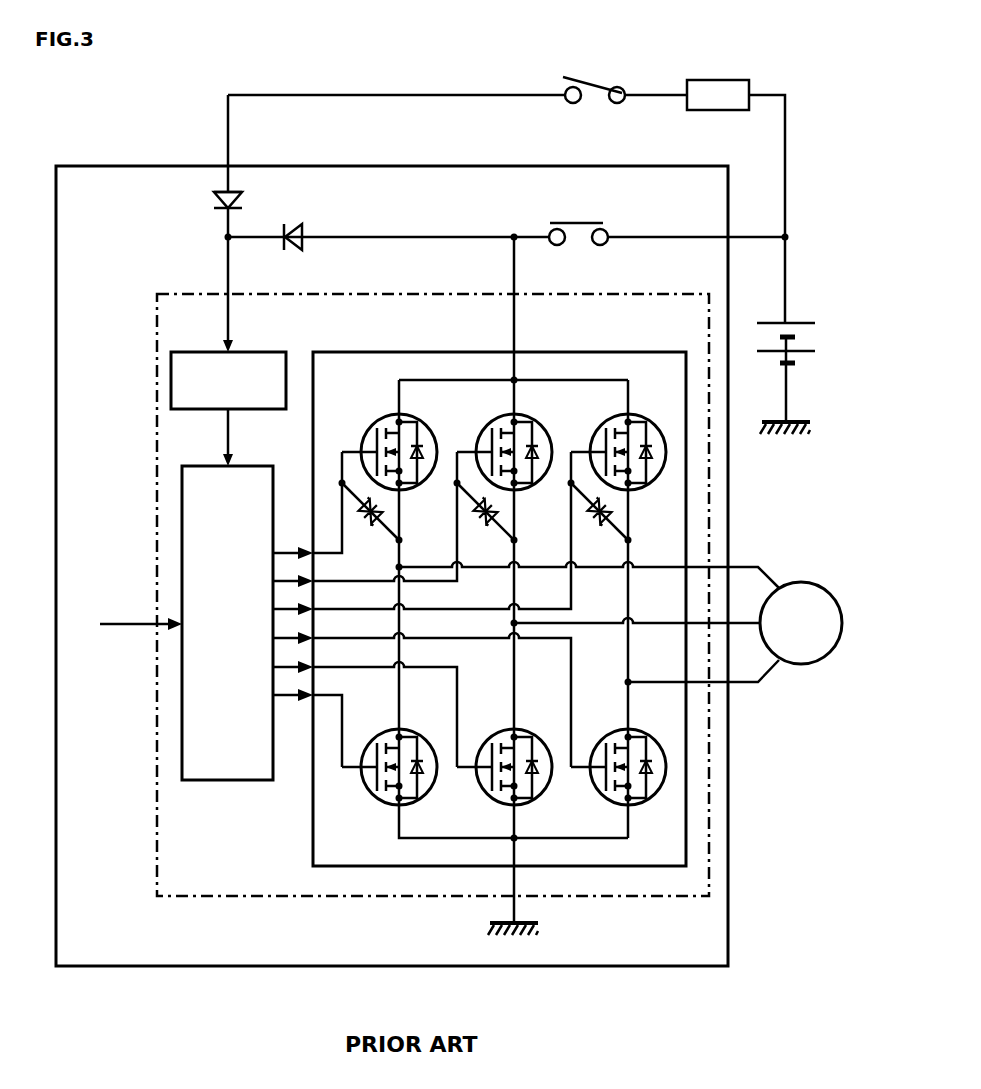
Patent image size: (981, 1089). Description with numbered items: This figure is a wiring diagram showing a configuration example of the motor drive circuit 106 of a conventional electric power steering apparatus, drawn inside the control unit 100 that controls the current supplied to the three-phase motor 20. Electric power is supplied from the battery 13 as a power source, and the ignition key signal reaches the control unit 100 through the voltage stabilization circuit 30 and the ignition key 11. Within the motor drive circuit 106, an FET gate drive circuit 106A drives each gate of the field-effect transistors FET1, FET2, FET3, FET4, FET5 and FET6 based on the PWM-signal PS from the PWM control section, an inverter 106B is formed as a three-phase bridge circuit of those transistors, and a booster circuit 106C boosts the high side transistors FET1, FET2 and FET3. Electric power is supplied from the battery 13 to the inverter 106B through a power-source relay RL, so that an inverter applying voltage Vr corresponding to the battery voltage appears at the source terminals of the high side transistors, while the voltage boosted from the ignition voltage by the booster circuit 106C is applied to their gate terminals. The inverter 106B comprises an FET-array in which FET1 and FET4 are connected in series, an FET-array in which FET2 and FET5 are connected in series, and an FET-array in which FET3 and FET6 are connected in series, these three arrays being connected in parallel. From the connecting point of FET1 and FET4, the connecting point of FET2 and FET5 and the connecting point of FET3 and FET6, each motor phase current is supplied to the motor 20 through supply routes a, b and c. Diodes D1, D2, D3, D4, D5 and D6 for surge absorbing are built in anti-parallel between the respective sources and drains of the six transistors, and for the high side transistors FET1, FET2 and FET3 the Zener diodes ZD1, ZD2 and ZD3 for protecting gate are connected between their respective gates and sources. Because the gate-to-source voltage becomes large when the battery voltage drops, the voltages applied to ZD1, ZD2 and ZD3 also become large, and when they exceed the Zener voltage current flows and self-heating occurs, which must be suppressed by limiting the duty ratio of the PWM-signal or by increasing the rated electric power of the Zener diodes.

The ignition key 11 is at (594, 72).
The voltage stabilization circuit 30 is at (719, 80).
The control unit 100 is at (713, 166).
The motor drive circuit 106 is at (688, 290).
The FET gate drive circuit 106A is at (265, 467).
The inverter 106B is at (661, 351).
The booster circuit 106C is at (265, 350).
The battery 13 is at (808, 322).
The motor 20 is at (824, 586).
The power-source relay RL is at (507, 225).
The PWM-signal PS is at (127, 605).
The inverter applying voltage Vr is at (434, 325).
The supply route a is at (748, 565).
The supply route b is at (748, 621).
The supply route c is at (748, 680).
The field-effect transistor FET1 is at (385, 447).
The field-effect transistor FET2 is at (500, 447).
The field-effect transistor FET3 is at (614, 447).
The field-effect transistor FET4 is at (385, 776).
The field-effect transistor FET5 is at (500, 776).
The field-effect transistor FET6 is at (614, 776).
The diode for surge absorbing D1 is at (422, 462).
The diode for surge absorbing D2 is at (537, 462).
The diode for surge absorbing D3 is at (651, 462).
The diode for surge absorbing D4 is at (421, 760).
The diode for surge absorbing D5 is at (536, 760).
The diode for surge absorbing D6 is at (650, 760).
The Zener diode for protecting gate ZD1 is at (371, 521).
The Zener diode for protecting gate ZD2 is at (486, 521).
The Zener diode for protecting gate ZD3 is at (600, 521).